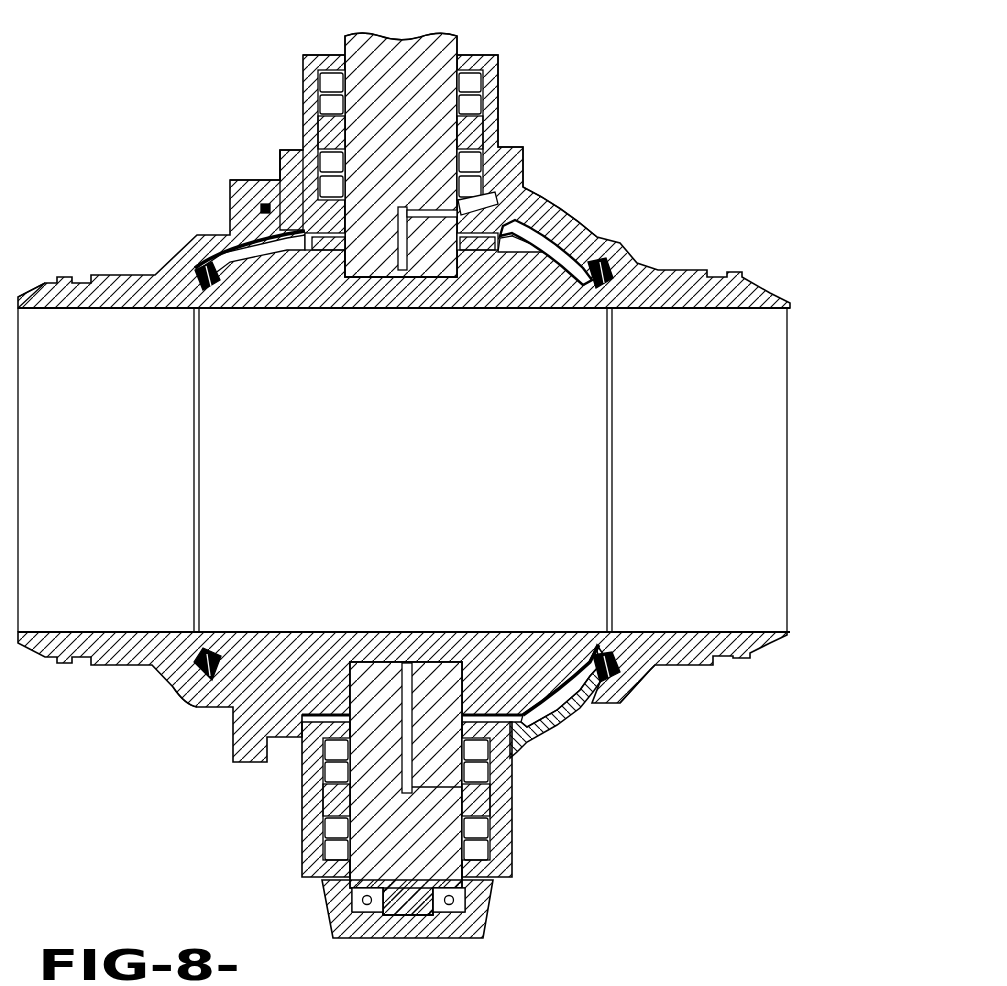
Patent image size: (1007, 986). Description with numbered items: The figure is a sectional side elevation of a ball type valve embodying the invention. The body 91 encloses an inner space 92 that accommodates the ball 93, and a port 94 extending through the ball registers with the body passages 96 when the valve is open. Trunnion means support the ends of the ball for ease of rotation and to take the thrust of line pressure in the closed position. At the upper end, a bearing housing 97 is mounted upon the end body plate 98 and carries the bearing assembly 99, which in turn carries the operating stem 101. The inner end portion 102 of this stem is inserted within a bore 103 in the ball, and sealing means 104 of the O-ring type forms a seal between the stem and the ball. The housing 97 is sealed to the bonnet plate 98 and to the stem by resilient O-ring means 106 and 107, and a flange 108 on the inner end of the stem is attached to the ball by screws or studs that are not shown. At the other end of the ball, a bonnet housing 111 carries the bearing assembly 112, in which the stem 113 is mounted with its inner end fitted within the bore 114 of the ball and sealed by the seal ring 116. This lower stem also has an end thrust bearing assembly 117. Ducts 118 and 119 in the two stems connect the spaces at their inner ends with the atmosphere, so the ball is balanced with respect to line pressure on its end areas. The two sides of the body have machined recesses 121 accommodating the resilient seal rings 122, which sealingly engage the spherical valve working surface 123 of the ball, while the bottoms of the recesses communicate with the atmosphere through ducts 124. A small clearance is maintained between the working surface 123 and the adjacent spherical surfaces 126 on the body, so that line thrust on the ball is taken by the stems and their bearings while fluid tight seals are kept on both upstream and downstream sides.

The body 91 is at (583, 227).
The inner space 92 is at (550, 243).
The ball 93 is at (563, 288).
The port 94 is at (587, 388).
The body passages 96 is at (90, 333).
The bearing housing 97 is at (497, 92).
The end body plate 98 is at (265, 200).
The bearing assembly 99 is at (483, 113).
The operating stem 101 is at (457, 45).
The inner end portion 102 is at (428, 267).
The bore 103 is at (335, 252).
The sealing means 104 is at (465, 270).
The sealing means 106 is at (305, 217).
The sealing means 107 is at (497, 197).
The flange 108 is at (316, 252).
The bonnet housing 111 is at (302, 797).
The bearing assembly 112 is at (480, 776).
The stem 113 is at (367, 872).
The bore 114 is at (487, 655).
The seal ring 116 is at (340, 670).
The end thrust bearing assembly 117 is at (490, 906).
The duct 118 is at (400, 268).
The duct 119 is at (404, 667).
The machined recesses 121 is at (655, 668).
The resilient seal rings 122 is at (594, 710).
The spherical valve working surface 123 is at (207, 298).
The ducts 124 is at (187, 683).
The spherical surfaces 126 is at (175, 308).